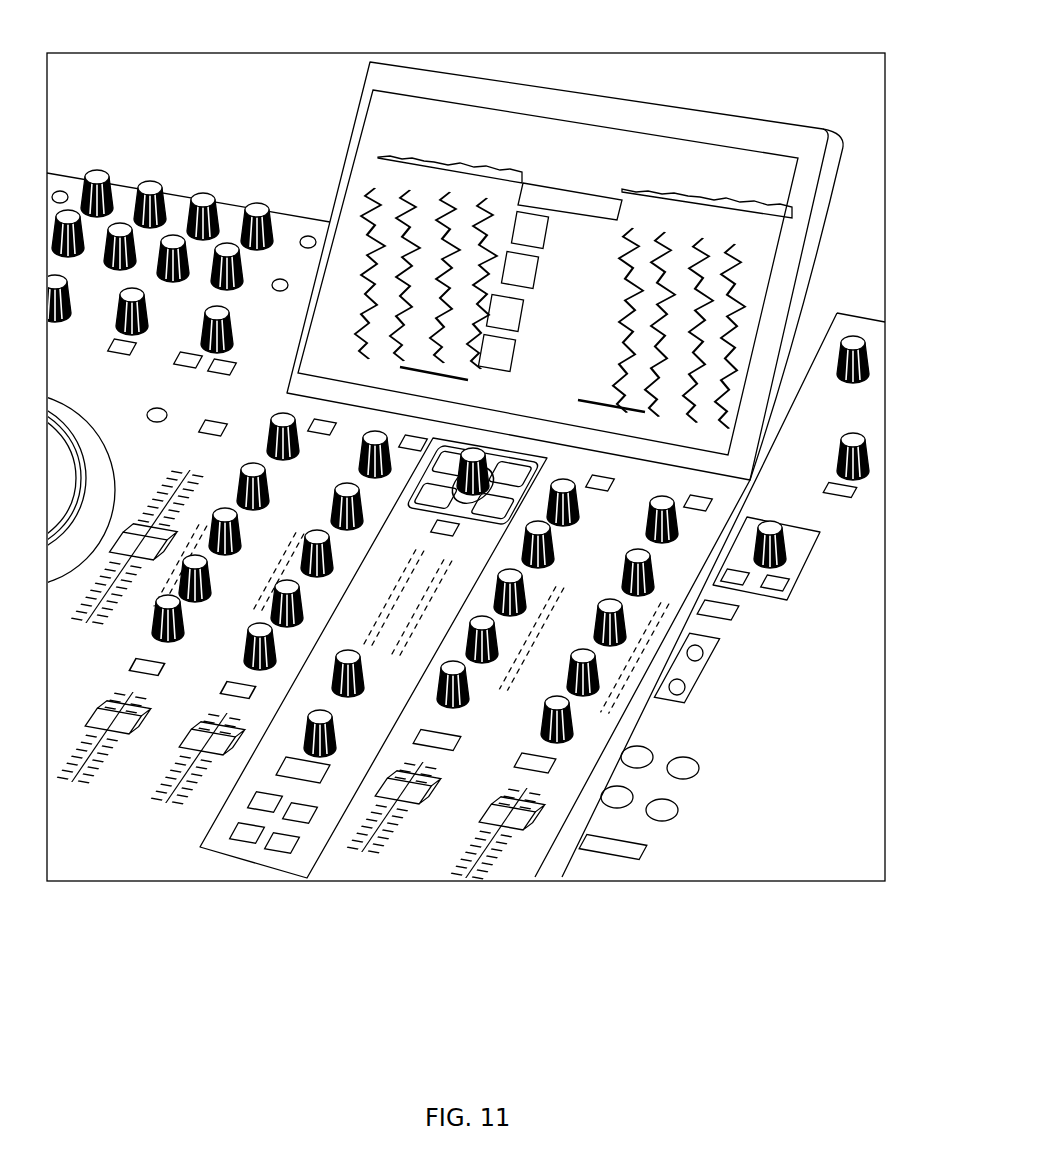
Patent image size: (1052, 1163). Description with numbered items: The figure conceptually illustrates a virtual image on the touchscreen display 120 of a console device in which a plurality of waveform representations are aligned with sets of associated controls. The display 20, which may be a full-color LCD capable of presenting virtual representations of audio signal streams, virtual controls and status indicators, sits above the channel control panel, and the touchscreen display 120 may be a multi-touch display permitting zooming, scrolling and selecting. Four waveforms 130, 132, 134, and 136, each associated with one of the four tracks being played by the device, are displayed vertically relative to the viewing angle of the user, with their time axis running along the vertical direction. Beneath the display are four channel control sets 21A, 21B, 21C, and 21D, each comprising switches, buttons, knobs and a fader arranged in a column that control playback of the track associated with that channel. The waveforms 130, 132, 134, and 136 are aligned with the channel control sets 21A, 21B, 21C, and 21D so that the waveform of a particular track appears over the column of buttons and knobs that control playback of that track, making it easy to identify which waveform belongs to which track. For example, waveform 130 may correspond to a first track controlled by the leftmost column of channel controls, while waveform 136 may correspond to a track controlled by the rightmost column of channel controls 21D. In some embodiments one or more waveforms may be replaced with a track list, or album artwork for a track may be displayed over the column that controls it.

The display 20 is at (803, 127).
The touchscreen display 120 is at (757, 280).
The waveform 130 is at (400, 72).
The waveform 132 is at (497, 80).
The waveform 134 is at (677, 105).
The waveform 136 is at (762, 120).
The channel control set 21A is at (190, 893).
The channel control set 21B is at (420, 893).
The channel control set 21C is at (118, 893).
The channel control set 21D is at (525, 893).